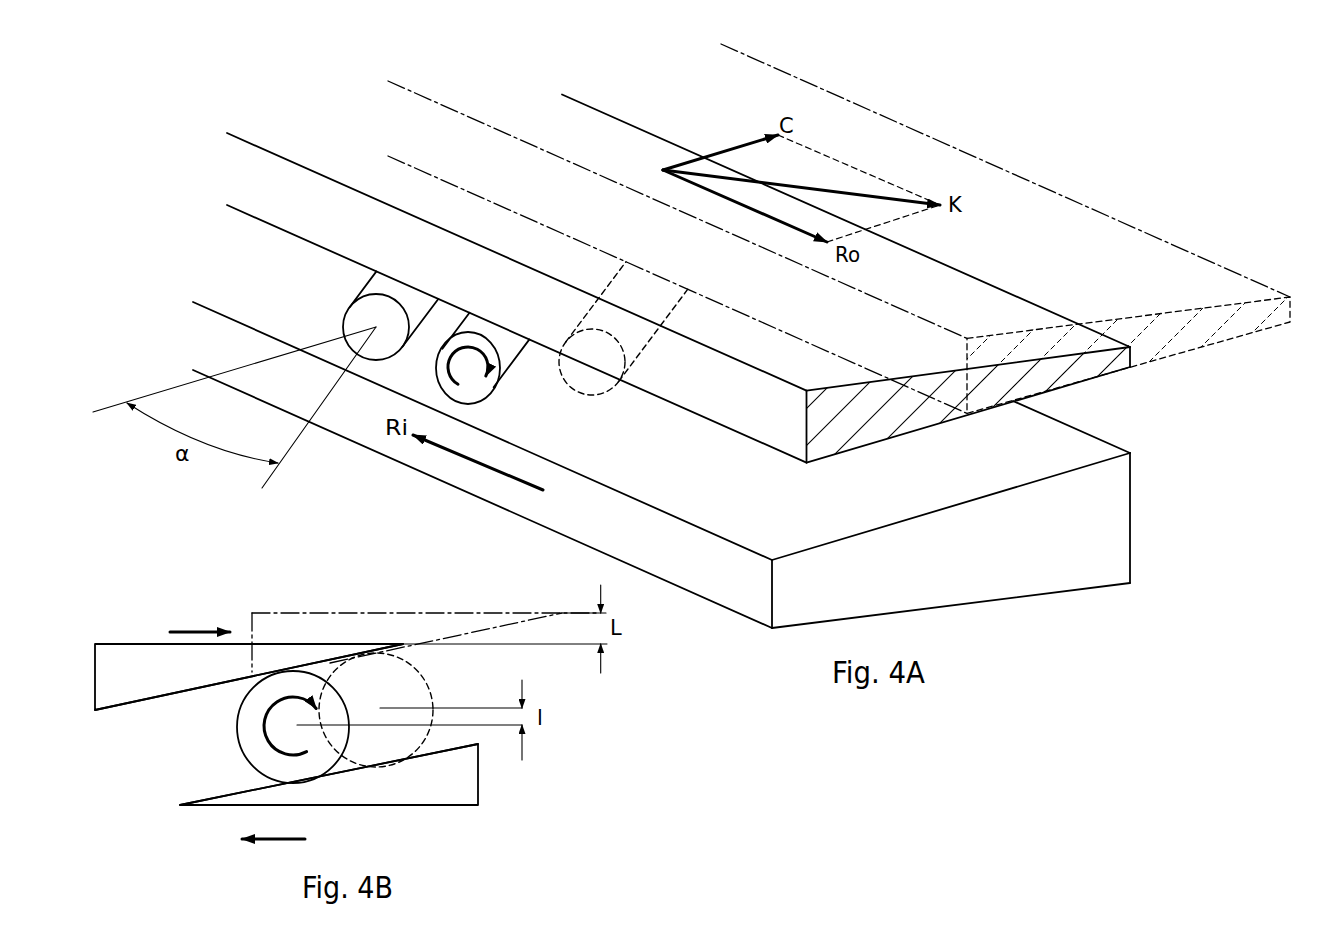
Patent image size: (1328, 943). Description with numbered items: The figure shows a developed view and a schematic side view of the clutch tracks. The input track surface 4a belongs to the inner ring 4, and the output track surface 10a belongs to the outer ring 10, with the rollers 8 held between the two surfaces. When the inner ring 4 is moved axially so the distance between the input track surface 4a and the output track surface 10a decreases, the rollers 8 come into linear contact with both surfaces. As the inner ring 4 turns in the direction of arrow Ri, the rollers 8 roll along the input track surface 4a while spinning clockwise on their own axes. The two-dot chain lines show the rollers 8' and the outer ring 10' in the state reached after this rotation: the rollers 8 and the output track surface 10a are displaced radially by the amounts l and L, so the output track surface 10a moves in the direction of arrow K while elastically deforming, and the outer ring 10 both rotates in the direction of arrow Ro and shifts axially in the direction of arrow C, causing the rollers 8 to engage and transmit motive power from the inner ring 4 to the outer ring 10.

In FIG. 4A, the inner ring 4 is at (556, 524).
In FIG. 4B, the inner ring 4 is at (455, 795).
In FIG. 4A, the input track surface 4a is at (1083, 447).
In FIG. 4B, the input track surface 4a is at (230, 795).
In FIG. 4A, the rollers 8 is at (456, 355).
In FIG. 4B, the rollers 8 is at (353, 727).
In FIG. 4A, the rollers in rotated state 8' is at (623, 374).
In FIG. 4B, the rollers in rotated state 8' is at (420, 710).
In FIG. 4A, the outer ring 10 is at (719, 298).
In FIG. 4B, the outer ring 10 is at (351, 639).
In FIG. 4A, the outer ring in rotated state 10' is at (858, 247).
In FIG. 4B, the outer ring in rotated state 10' is at (418, 605).
In FIG. 4A, the output track surface 10a is at (873, 447).
In FIG. 4B, the output track surface 10a is at (140, 700).